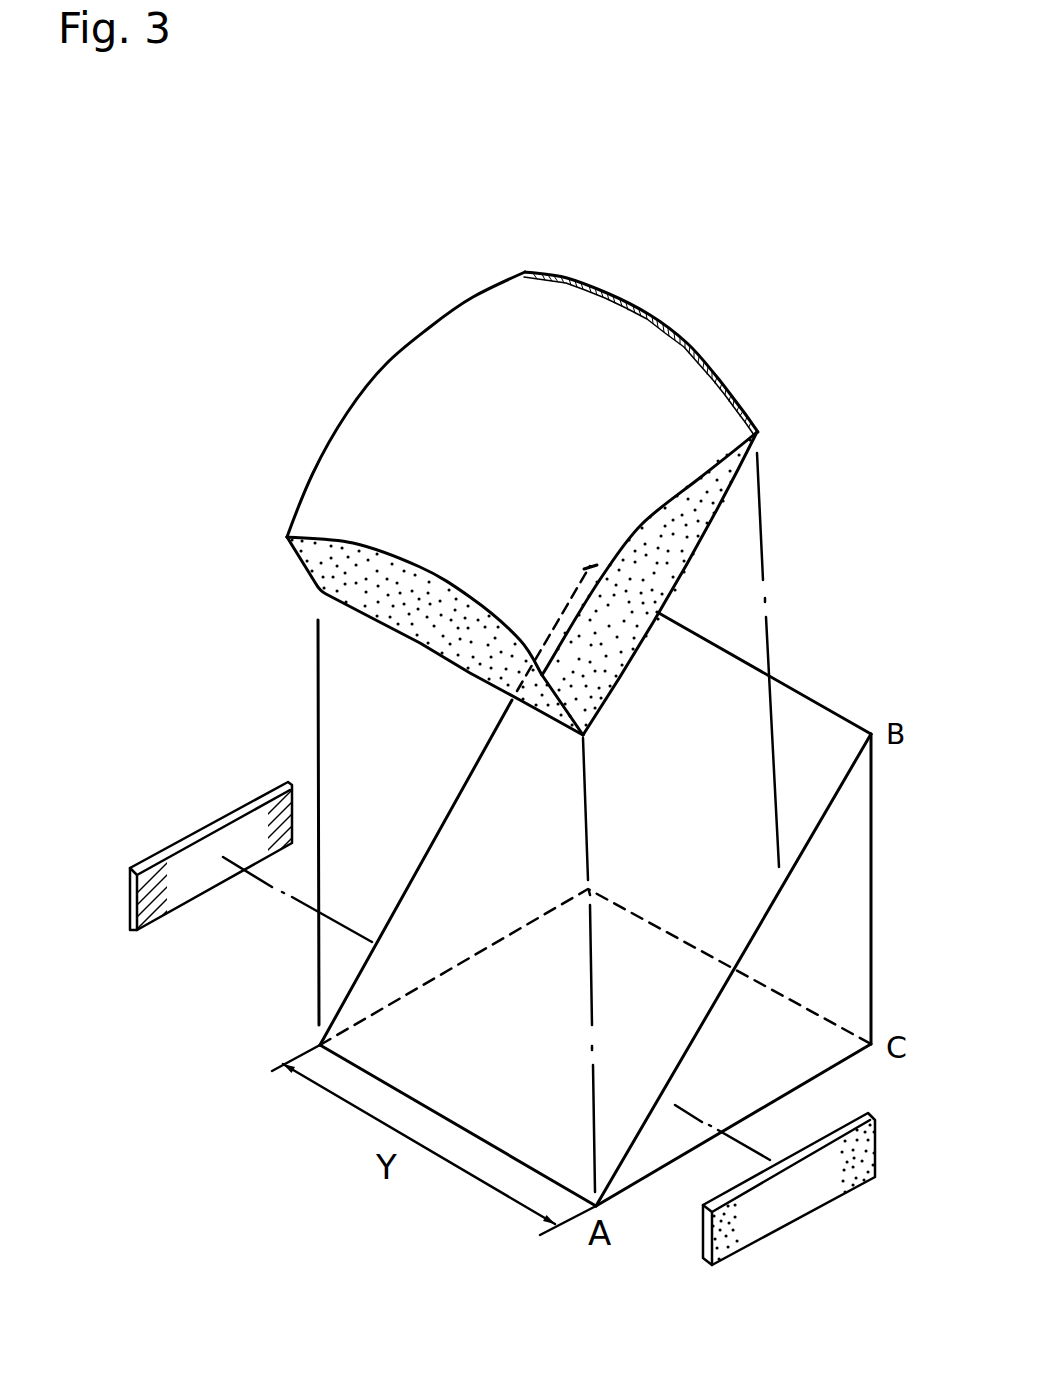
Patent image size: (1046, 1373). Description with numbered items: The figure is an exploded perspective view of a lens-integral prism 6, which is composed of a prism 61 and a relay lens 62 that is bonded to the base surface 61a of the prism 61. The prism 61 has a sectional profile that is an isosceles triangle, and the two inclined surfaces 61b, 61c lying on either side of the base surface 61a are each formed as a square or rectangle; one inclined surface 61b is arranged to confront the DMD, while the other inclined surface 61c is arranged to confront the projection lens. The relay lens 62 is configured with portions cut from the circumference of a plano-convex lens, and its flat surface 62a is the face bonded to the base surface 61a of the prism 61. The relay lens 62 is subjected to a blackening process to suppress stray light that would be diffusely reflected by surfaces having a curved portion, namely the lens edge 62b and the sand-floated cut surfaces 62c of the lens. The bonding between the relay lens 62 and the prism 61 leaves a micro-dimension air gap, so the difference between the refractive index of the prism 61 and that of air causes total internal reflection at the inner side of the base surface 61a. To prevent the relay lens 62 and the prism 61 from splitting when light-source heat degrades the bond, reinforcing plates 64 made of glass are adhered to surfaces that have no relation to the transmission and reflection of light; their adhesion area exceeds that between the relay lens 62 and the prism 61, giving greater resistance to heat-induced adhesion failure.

The lens-integral prism 6 is at (470, 250).
The prism 61 is at (802, 692).
The base surface 61a is at (380, 982).
The inclined surface 61b is at (660, 1168).
The inclined surface 61c is at (873, 931).
The relay lens 62 is at (617, 360).
The flat surface 62a is at (695, 515).
The lens edge 62b is at (731, 382).
The cut surfaces of the lens 62c is at (427, 627).
The reinforcing plates 64 is at (188, 834).